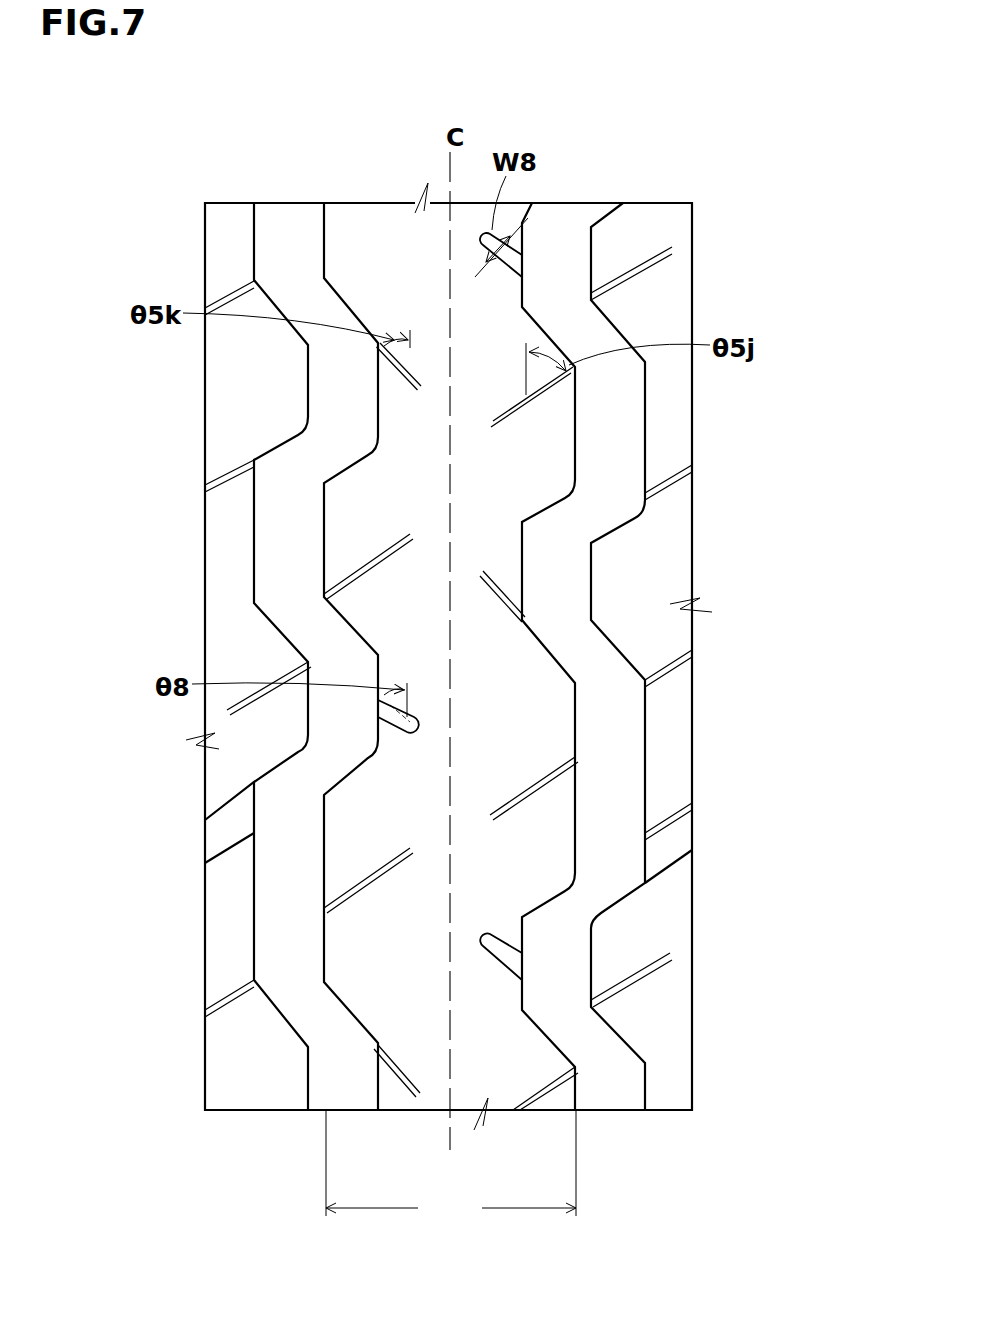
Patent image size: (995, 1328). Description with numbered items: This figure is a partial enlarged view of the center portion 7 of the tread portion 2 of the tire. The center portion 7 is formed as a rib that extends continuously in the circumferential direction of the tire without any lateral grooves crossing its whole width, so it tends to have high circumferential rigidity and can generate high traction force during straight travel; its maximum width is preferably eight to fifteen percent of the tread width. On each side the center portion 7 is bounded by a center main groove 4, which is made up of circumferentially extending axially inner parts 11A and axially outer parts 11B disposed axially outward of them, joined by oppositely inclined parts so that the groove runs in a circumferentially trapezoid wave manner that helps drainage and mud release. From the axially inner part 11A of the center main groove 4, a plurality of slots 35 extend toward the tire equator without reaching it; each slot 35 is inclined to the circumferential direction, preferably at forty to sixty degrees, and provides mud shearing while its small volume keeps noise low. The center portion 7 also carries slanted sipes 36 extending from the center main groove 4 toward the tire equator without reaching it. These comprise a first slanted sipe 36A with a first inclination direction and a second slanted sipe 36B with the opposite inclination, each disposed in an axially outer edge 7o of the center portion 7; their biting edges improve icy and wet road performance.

The tread portion 2 is at (644, 234).
The center main groove 4 is at (292, 955).
The center portion 7 is at (387, 236).
The axially outer edge of the center portion 7o is at (577, 812).
The axially inner part 11A is at (386, 705).
The axially outer part 11B is at (286, 536).
The slot 35 is at (519, 258).
The slanted sipe 36 is at (458, 678).
The first slanted sipe 36A is at (504, 421).
The second slanted sipe 36B is at (419, 390).